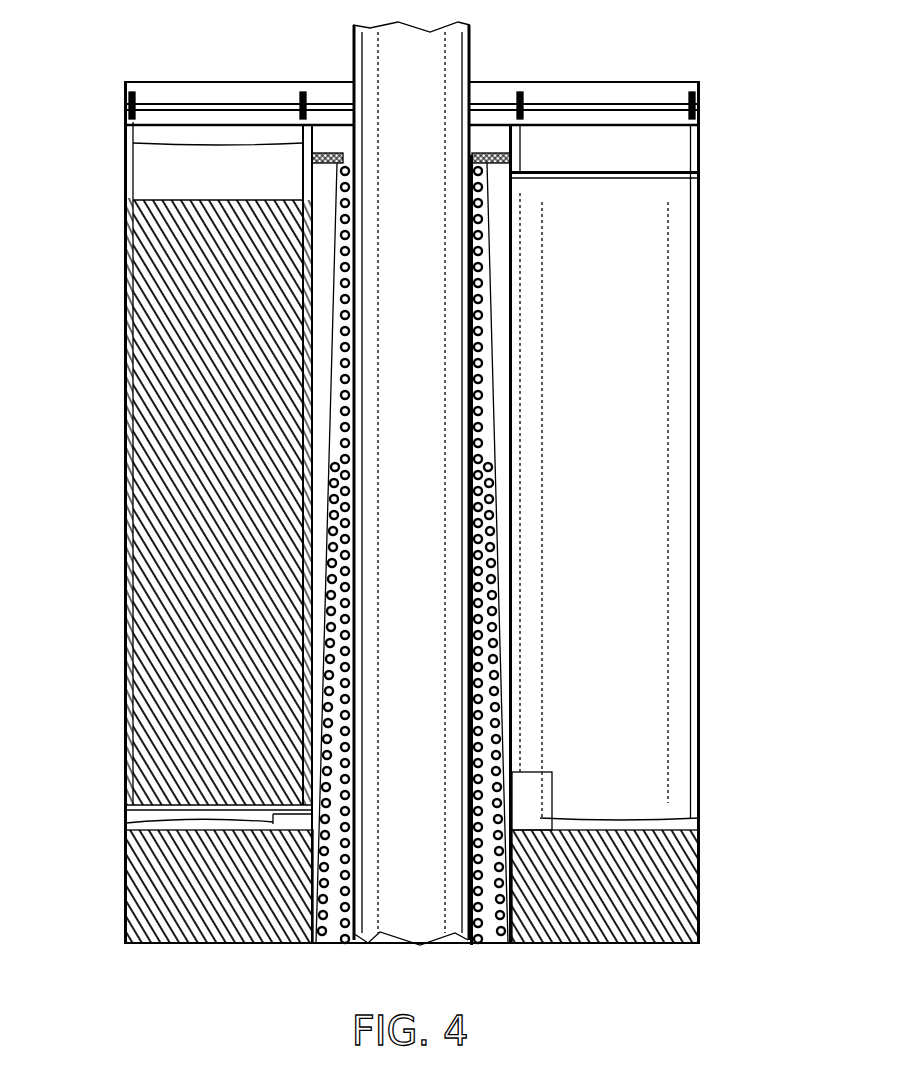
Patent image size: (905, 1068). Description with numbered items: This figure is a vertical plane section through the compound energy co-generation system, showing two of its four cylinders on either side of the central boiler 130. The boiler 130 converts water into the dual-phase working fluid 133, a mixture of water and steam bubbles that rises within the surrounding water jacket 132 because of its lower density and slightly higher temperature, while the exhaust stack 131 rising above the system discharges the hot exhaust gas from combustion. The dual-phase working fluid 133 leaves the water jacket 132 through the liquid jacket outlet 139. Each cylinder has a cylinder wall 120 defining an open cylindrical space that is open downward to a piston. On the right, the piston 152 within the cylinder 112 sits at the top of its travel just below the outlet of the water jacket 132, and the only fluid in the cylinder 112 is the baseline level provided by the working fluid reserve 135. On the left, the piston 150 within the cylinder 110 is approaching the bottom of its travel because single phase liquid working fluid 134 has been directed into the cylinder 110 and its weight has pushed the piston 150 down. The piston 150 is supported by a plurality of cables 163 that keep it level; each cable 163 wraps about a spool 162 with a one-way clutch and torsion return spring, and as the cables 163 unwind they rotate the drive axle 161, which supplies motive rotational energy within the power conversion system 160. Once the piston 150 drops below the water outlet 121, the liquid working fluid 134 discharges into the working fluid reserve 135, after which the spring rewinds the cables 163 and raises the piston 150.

The cylinder 110 is at (122, 336).
The cylinder 112 is at (702, 263).
The cylinder wall 120 is at (124, 632).
The water outlet 121 is at (126, 823).
The boiler 130 is at (472, 40).
The exhaust stack 131 is at (472, 67).
The water jacket 132 is at (497, 493).
The dual-phase working fluid 133 is at (503, 936).
The single phase liquid working fluid 134 is at (165, 568).
The working fluid reserve 135 is at (126, 918).
The liquid jacket outlet 139 is at (323, 153).
The piston 150 is at (126, 808).
The piston 152 is at (700, 172).
The power conversion system 160 is at (147, 98).
The drive axle 161 is at (222, 103).
The spool 162 is at (300, 92).
The cable 163 is at (133, 145).